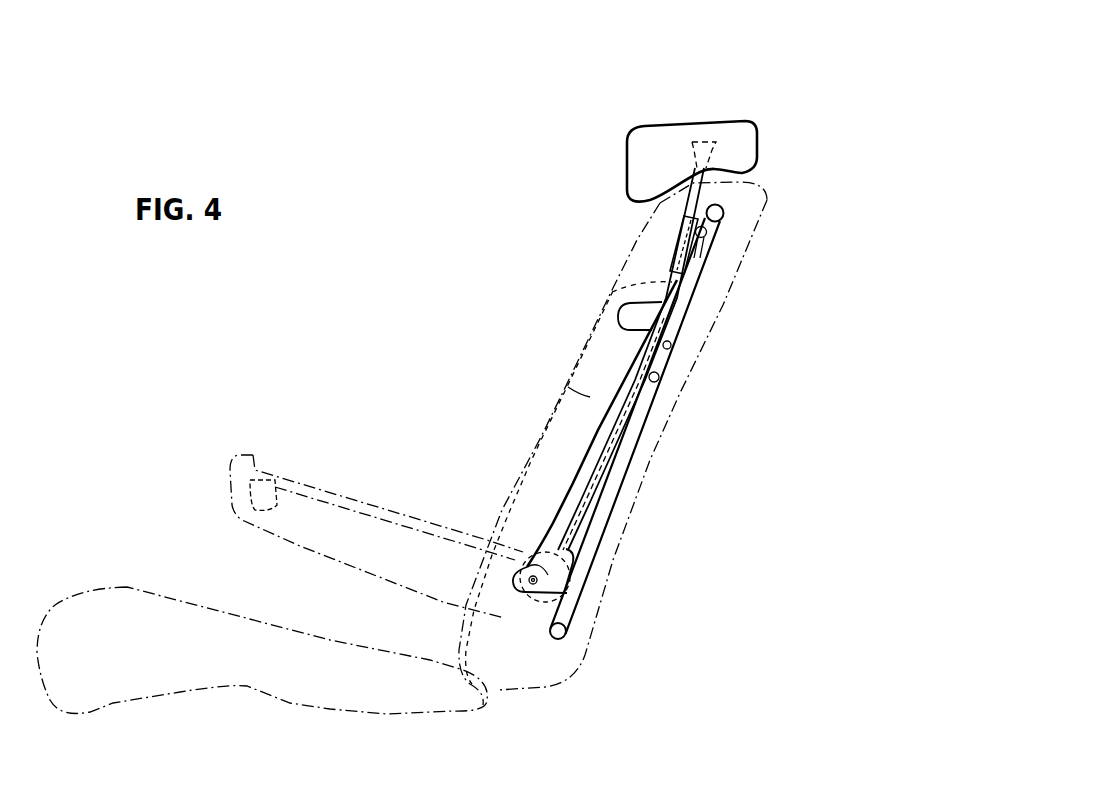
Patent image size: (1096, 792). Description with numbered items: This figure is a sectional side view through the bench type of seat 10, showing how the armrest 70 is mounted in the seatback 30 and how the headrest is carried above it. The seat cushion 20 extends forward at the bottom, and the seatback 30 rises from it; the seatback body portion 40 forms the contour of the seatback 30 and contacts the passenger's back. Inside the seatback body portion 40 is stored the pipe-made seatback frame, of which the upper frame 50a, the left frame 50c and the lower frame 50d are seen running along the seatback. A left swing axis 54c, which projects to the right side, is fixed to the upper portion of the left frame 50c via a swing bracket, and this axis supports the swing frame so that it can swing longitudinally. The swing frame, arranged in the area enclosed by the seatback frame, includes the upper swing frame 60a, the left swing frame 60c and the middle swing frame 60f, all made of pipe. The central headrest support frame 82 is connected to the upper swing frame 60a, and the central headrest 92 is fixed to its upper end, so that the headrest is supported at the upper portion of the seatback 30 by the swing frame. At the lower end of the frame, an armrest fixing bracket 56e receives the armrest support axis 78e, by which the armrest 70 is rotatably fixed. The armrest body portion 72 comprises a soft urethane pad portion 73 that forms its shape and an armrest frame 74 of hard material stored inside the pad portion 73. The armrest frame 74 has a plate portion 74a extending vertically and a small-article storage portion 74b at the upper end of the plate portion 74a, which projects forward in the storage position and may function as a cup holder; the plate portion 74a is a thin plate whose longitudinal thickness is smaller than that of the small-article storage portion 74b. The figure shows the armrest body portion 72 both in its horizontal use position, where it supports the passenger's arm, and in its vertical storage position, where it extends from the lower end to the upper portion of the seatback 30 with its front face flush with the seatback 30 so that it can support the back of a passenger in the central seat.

The bench type of seat 10 is at (822, 92).
The seat cushion 20 is at (151, 607).
The seatback 30 is at (637, 500).
The seatback body portion 40 is at (623, 527).
The upper frame 50a is at (723, 210).
The left frame 50c is at (707, 236).
The lower frame 50d is at (570, 630).
The left swing axis 54c is at (671, 347).
The armrest fixing bracket 56e is at (533, 585).
The upper swing frame 60a is at (692, 268).
The left swing frame 60c is at (672, 290).
The middle swing frame 60f is at (657, 381).
The armrest 70 is at (583, 360).
The armrest body portion 72 is at (547, 442).
The pad portion 73 is at (568, 387).
The armrest frame 74 is at (550, 518).
The plate portion 74a is at (588, 483).
The small-article storage portion 74b is at (622, 304).
The armrest support axis 78e is at (520, 588).
The central headrest support frame 82 is at (705, 174).
The central headrest 92 is at (732, 137).